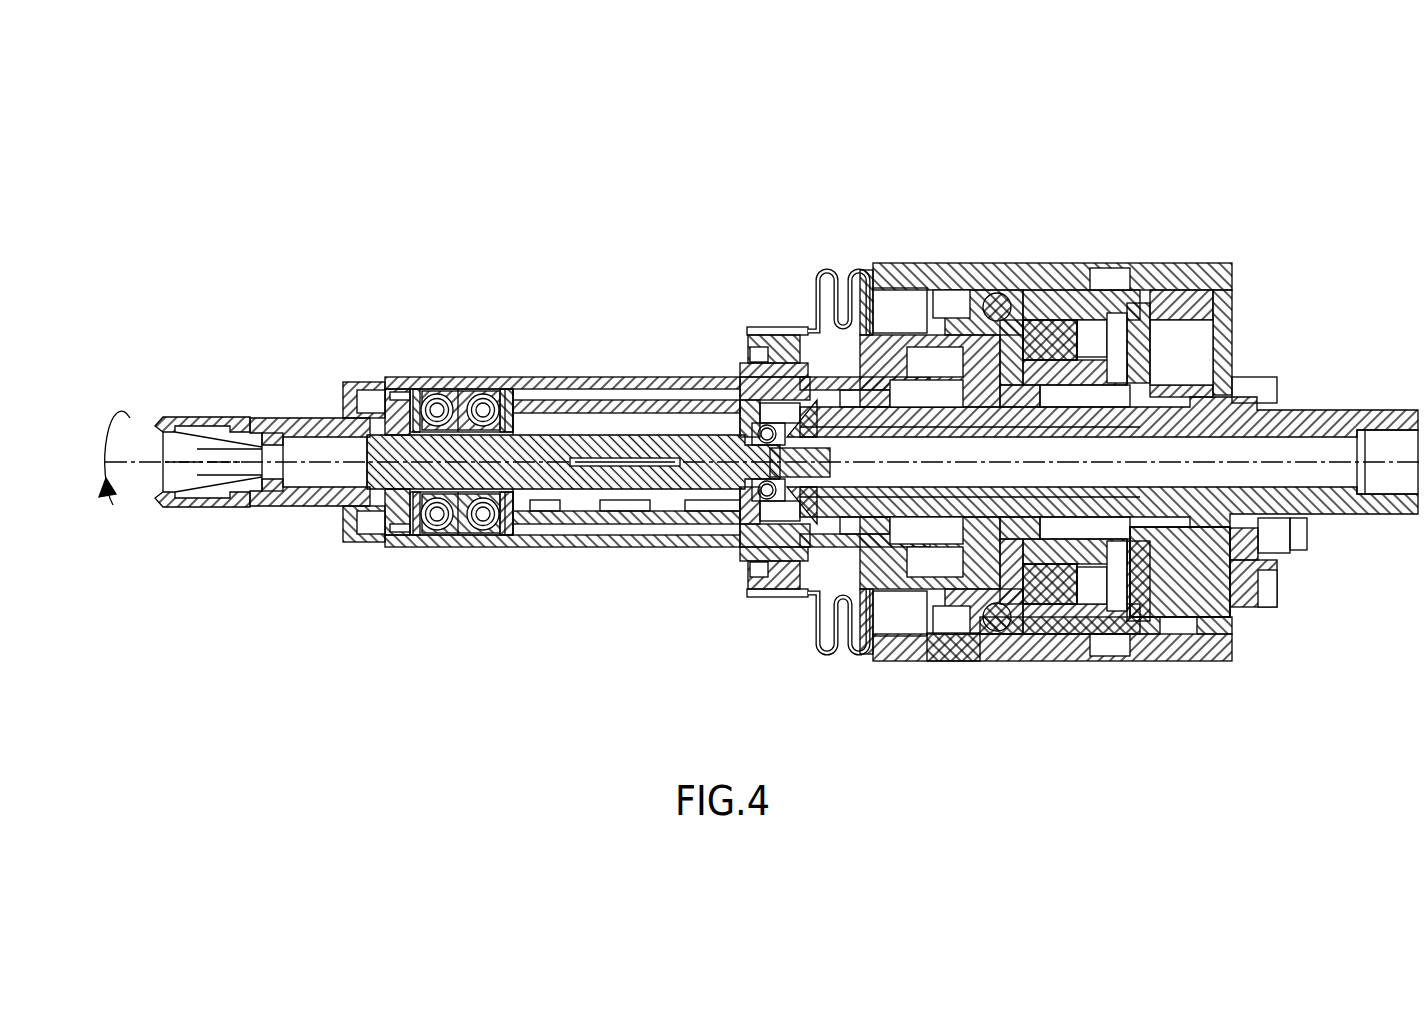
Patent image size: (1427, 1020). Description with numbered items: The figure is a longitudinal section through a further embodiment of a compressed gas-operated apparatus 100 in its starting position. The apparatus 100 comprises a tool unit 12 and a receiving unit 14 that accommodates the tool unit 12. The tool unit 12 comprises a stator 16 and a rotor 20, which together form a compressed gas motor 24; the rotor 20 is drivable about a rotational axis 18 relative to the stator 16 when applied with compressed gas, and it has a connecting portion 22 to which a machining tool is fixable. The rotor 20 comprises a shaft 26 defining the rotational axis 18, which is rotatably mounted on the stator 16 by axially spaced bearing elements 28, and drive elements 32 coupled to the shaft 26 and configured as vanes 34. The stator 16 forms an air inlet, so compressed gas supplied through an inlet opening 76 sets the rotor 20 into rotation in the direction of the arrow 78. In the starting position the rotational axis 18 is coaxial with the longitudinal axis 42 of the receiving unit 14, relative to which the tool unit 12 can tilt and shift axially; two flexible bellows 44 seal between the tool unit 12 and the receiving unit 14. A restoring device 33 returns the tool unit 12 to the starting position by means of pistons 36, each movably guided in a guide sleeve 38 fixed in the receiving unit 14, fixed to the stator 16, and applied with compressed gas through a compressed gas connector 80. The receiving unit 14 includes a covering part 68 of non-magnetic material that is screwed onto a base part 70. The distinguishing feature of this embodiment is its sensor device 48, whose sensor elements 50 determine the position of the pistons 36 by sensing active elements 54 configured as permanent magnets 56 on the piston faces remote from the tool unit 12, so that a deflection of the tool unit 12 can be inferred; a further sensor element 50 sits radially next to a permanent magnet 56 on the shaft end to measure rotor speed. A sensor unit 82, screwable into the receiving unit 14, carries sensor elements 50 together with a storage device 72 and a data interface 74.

The compressed gas-operated apparatus 100 is at (1285, 200).
The tool unit 12 is at (573, 438).
The receiving unit 14 is at (1066, 453).
The stator 16 is at (1338, 510).
The rotational axis 18 is at (296, 492).
The rotor 20 is at (300, 428).
The connecting portion 22 is at (168, 400).
The compressed gas motor 24 is at (564, 438).
The shaft 26 is at (527, 530).
The bearing elements 28 is at (458, 530).
The drive elements 32 is at (620, 470).
The vanes 34 is at (625, 549).
The restoring device 33 is at (1100, 268).
The pistons 36 is at (1028, 268).
The guide sleeve 38 is at (1075, 268).
The longitudinal axis 42 is at (1290, 452).
The bellows 44 is at (835, 268).
The sensor device 48 is at (755, 385).
The sensor elements 50 is at (800, 388).
The active elements 54 is at (1148, 268).
The permanent magnets 56 is at (1018, 481).
The covering part 68 is at (1228, 608).
The base part 70 is at (990, 661).
The storage device 72 is at (1235, 605).
The data interface 74 is at (1248, 619).
The inlet opening 76 is at (1395, 490).
The arrow 78 is at (125, 520).
The compressed gas connector 80 is at (1283, 548).
The sensor unit 82 is at (1272, 585).